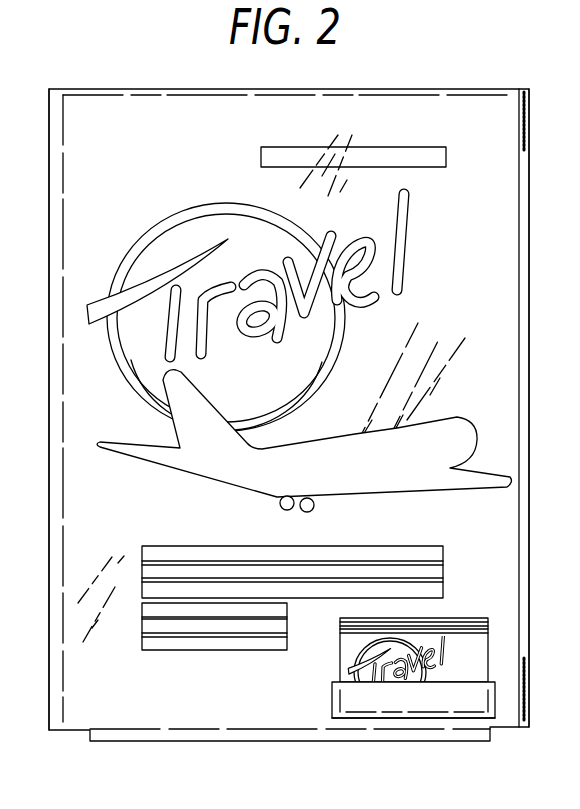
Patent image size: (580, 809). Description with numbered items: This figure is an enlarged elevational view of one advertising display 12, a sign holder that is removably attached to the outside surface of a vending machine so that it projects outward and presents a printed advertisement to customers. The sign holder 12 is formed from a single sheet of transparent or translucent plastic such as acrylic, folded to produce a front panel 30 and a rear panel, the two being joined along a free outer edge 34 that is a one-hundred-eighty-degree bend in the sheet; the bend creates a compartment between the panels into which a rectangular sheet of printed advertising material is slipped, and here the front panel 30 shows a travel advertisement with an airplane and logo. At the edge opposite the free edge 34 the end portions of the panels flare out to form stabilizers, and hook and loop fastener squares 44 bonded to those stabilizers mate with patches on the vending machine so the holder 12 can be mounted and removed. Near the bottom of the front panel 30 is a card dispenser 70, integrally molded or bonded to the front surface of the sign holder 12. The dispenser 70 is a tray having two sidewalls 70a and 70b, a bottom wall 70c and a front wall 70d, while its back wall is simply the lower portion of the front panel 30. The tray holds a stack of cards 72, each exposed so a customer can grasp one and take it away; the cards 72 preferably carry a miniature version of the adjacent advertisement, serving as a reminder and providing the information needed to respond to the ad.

The advertising display 12 is at (472, 88).
The front panel 30 is at (152, 127).
The free outer edge 34 is at (48, 328).
The hook and loop fastener squares 44 is at (531, 115).
The card dispenser 70 is at (330, 693).
The sidewall 70a is at (331, 704).
The sidewall 70b is at (496, 702).
The bottom wall 70c is at (407, 720).
The front wall 70d is at (385, 698).
The cards 72 is at (338, 664).